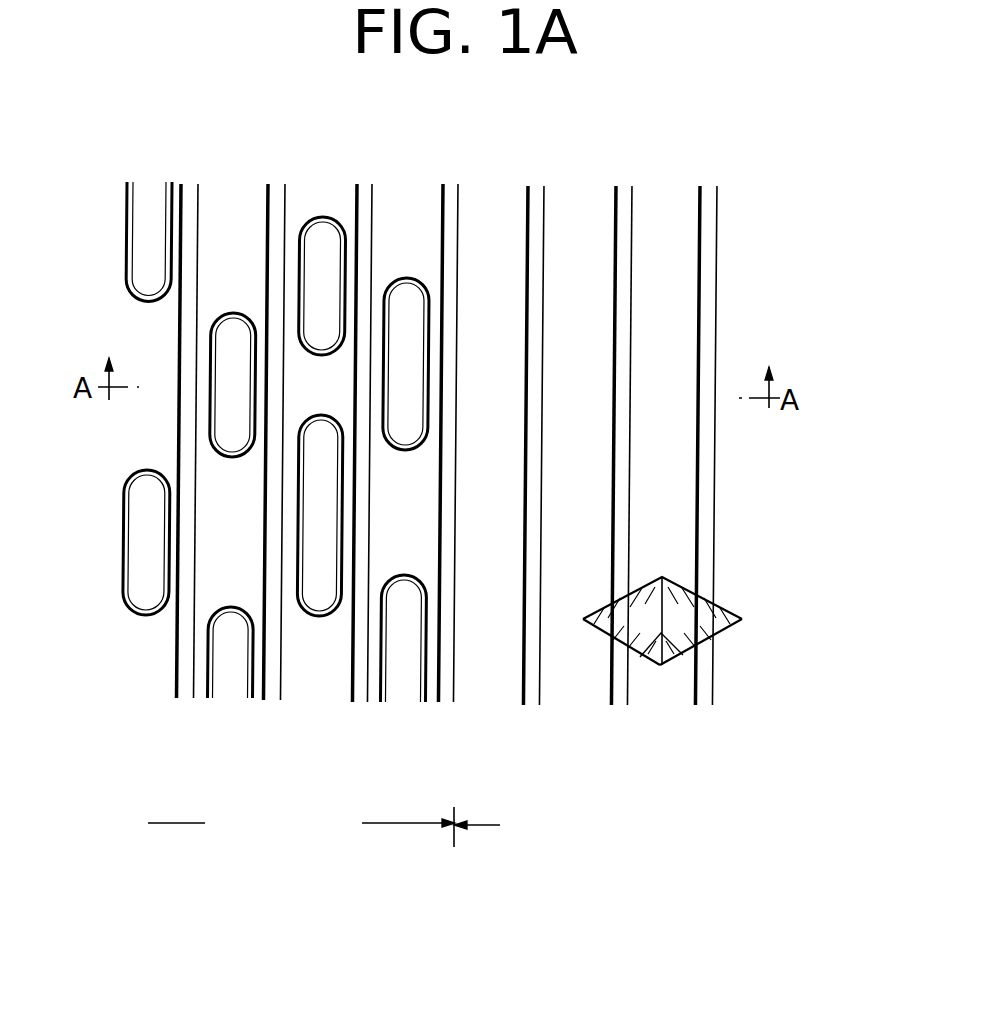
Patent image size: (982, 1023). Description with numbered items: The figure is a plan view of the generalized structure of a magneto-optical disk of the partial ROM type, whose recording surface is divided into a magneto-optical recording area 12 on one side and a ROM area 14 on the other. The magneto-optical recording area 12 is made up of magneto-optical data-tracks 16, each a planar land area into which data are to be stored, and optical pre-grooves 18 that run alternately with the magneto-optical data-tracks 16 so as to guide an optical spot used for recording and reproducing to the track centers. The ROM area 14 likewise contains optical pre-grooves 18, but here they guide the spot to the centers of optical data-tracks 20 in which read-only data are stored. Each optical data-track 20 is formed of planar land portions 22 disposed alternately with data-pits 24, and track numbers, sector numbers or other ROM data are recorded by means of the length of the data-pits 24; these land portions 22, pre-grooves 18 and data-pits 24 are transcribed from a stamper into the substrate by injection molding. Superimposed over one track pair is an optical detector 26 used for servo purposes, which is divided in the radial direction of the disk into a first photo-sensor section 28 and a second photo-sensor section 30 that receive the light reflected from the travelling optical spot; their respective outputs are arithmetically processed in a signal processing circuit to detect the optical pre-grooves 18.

The magneto-optical recording area 12 is at (606, 825).
The ROM area 14 is at (301, 809).
The magneto-optical data-track 16 is at (665, 318).
The optical pre-groove 18 is at (282, 207).
The optical data-track 20 is at (246, 178).
The planar land portion 22 is at (224, 225).
The data-pit 24 is at (230, 363).
The optical detector 26 is at (728, 608).
The first photo-sensor section 28 is at (638, 658).
The second photo-sensor section 30 is at (723, 633).